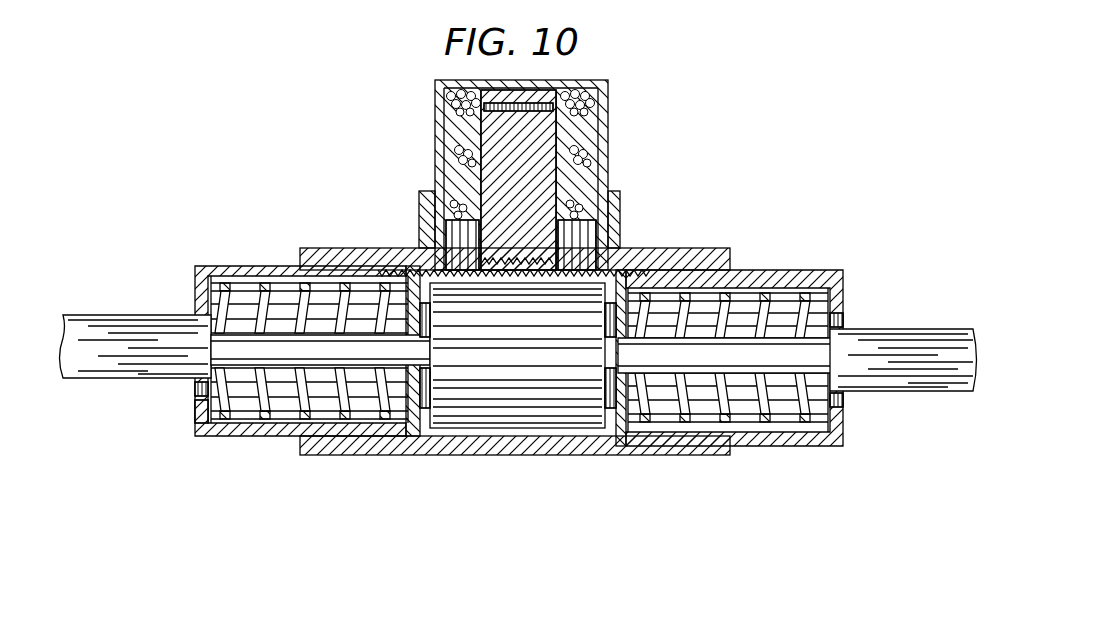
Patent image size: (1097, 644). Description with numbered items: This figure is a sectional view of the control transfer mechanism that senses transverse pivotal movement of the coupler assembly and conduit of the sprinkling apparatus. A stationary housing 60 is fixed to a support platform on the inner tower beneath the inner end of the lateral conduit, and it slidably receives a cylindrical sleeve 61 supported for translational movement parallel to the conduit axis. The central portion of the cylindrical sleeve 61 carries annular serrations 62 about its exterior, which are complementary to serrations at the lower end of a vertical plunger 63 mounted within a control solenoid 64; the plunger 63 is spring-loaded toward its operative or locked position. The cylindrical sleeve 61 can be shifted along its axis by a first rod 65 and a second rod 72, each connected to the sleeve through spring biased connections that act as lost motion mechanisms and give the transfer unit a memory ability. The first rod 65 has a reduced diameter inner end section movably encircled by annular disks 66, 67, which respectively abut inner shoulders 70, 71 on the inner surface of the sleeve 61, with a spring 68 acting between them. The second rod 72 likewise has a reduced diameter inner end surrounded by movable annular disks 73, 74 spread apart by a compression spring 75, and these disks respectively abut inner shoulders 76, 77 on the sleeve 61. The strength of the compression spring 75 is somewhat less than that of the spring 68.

The stationary housing 60 is at (616, 211).
The cylindrical sleeve 61 is at (262, 262).
The annular serrations 62 is at (532, 276).
The vertical plunger 63 is at (542, 157).
The control solenoid 64 is at (594, 117).
The first rod 65 is at (910, 322).
The annular disk 66 is at (610, 335).
The annular disk 67 is at (833, 287).
The spring 68 is at (745, 430).
The inner shoulder 70 is at (597, 405).
The inner shoulder 71 is at (824, 413).
The second rod 72 is at (128, 310).
The annular disk 73 is at (418, 374).
The annular disk 74 is at (187, 385).
The compression spring 75 is at (285, 414).
The inner shoulder 76 is at (420, 406).
The inner shoulder 77 is at (197, 400).